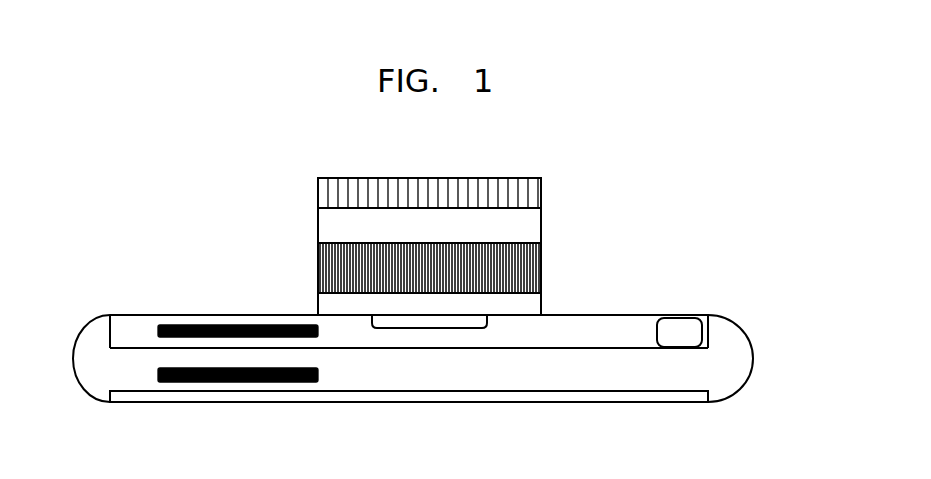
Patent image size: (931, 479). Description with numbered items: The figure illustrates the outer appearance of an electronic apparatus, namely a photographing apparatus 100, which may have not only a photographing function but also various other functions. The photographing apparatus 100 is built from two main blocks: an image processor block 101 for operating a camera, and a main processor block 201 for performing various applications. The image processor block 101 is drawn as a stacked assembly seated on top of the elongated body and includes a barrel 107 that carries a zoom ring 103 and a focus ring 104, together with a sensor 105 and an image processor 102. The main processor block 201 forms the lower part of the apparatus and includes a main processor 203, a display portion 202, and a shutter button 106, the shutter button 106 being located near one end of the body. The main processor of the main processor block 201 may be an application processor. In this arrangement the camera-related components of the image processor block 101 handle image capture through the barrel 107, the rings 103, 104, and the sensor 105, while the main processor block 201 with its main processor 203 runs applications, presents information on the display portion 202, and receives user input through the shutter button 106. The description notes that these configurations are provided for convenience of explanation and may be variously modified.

The photographing apparatus 100 is at (637, 158).
The image processor block 101 is at (545, 332).
The image processor 102 is at (195, 327).
The zoom ring 103 is at (328, 272).
The focus ring 104 is at (330, 190).
The sensor 105 is at (437, 323).
The shutter button 106 is at (682, 327).
The barrel 107 is at (328, 225).
The main processor block 201 is at (563, 378).
The display portion 202 is at (333, 397).
The main processor 203 is at (245, 382).